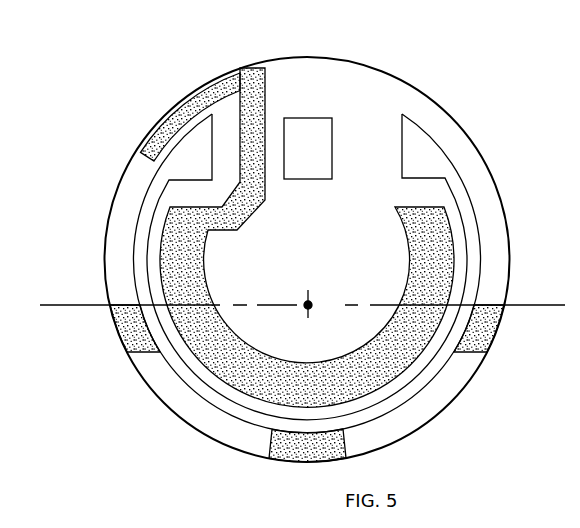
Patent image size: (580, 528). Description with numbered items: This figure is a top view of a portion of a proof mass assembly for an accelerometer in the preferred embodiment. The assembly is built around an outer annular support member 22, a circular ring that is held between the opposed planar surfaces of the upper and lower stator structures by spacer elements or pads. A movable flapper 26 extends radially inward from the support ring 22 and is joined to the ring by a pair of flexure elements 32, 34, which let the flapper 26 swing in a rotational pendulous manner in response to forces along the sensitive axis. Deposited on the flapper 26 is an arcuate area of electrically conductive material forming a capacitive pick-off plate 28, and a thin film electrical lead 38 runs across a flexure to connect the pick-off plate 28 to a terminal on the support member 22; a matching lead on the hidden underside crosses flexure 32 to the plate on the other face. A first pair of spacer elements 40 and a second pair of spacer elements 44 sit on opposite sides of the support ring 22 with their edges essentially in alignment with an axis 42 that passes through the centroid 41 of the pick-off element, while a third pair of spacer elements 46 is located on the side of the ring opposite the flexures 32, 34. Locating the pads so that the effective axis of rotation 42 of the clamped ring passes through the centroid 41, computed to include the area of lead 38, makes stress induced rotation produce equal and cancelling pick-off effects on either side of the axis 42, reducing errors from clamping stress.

The outer annular support member 22 is at (477, 168).
The flapper 26 is at (385, 187).
The capacitive pick-off plate 28 is at (435, 352).
The flexure element 32 is at (382, 107).
The flexure element 34 is at (225, 113).
The pick-off lead 38 is at (264, 92).
The spacer element 40 is at (500, 325).
The centroid of the pick-off element 41 is at (310, 303).
The axis 42 is at (68, 303).
The spacer element 44 is at (123, 338).
The spacer element 46 is at (297, 452).